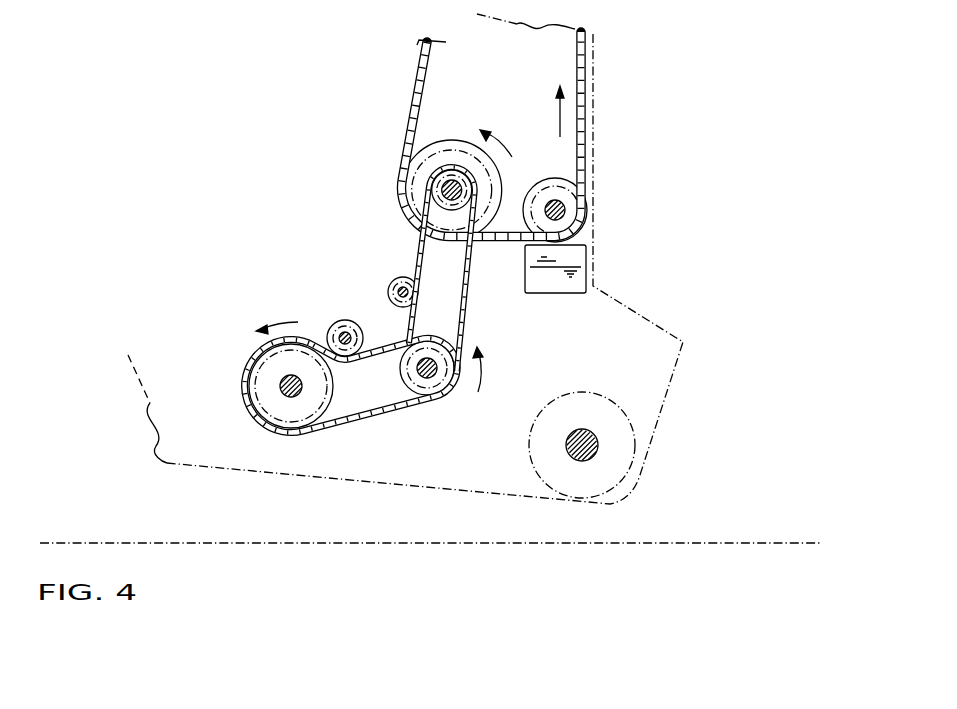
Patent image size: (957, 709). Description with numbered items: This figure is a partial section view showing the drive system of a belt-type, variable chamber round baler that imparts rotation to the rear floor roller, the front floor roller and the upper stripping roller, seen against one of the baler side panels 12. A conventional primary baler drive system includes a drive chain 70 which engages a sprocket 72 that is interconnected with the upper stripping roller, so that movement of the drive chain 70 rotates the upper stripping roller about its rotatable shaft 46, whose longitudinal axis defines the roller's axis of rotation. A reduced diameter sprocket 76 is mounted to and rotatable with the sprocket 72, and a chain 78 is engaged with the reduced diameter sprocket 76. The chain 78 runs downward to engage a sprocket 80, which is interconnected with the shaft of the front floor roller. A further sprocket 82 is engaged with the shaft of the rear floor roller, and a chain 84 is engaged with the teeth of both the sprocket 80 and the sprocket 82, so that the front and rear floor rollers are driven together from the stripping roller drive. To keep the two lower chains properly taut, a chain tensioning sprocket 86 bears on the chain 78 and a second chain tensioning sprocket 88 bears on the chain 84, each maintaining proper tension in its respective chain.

The side panel 12 is at (531, 90).
The rotatable shaft 46 is at (440, 186).
The drive chain 70 is at (410, 109).
The sprocket 72 is at (453, 141).
The reduced diameter sprocket 76 is at (445, 213).
The chain 78 is at (473, 284).
The sprocket 80 is at (396, 397).
The sprocket 82 is at (341, 383).
The chain 84 is at (371, 417).
The chain tensioning sprocket 86 is at (390, 287).
The chain tensioning sprocket 88 is at (345, 320).